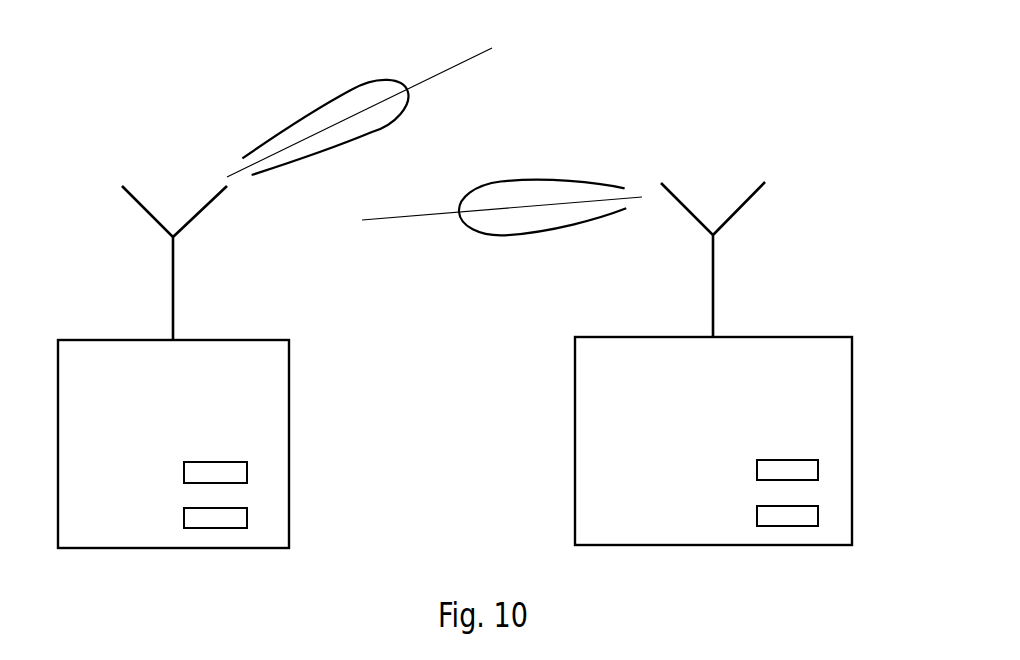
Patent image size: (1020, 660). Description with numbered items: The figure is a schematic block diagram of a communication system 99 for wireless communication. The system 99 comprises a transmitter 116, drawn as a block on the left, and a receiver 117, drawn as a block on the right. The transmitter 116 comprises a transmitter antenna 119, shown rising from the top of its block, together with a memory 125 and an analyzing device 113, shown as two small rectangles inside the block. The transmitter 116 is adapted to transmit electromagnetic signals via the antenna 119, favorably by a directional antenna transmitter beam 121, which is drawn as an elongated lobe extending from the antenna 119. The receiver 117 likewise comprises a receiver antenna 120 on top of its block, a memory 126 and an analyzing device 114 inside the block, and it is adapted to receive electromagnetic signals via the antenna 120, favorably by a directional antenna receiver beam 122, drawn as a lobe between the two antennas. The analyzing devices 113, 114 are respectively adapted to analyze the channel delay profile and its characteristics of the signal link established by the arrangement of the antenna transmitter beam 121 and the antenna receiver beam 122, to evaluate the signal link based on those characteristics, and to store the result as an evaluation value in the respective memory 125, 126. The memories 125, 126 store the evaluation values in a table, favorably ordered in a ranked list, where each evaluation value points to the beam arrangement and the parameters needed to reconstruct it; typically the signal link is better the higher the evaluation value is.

The communication system 99 is at (341, 568).
The analyzing device 113 is at (240, 519).
The analyzing device 114 is at (808, 517).
The transmitter 116 is at (277, 396).
The receiver 117 is at (590, 427).
The transmitter antenna 119 is at (172, 196).
The receiver antenna 120 is at (711, 194).
The antenna transmitter beam 121 is at (317, 103).
The antenna receiver beam 122 is at (513, 180).
The memory 125 is at (240, 474).
The memory 126 is at (808, 470).